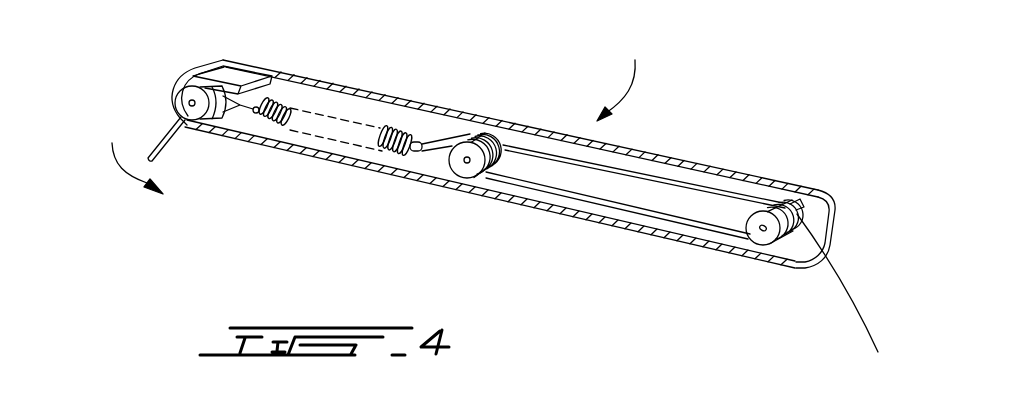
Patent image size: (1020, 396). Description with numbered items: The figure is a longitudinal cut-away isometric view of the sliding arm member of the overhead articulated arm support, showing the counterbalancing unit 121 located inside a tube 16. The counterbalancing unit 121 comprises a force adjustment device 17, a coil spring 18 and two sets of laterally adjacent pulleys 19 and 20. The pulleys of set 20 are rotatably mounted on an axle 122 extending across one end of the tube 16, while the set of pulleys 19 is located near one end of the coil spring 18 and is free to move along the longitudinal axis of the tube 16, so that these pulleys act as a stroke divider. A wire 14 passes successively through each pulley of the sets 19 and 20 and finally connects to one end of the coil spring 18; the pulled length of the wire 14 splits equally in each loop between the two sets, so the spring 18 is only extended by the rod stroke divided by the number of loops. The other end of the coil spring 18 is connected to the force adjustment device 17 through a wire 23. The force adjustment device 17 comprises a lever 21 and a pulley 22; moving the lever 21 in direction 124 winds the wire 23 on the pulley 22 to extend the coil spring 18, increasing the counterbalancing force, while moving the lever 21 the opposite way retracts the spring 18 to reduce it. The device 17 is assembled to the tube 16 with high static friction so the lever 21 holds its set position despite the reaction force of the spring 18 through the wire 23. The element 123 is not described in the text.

The wire 14 is at (846, 298).
The tube 16 is at (447, 105).
The force adjustment device 17 is at (175, 98).
The coil spring 18 is at (385, 151).
The set of pulleys 19 is at (477, 180).
The set of pulleys 20 is at (764, 231).
The lever 21 is at (163, 150).
The pulley 22 is at (206, 120).
The wire 23 is at (238, 75).
The counterbalancing unit 121 is at (626, 77).
The axle 122 is at (797, 206).
The axle 123 is at (466, 163).
The direction 124 is at (121, 175).